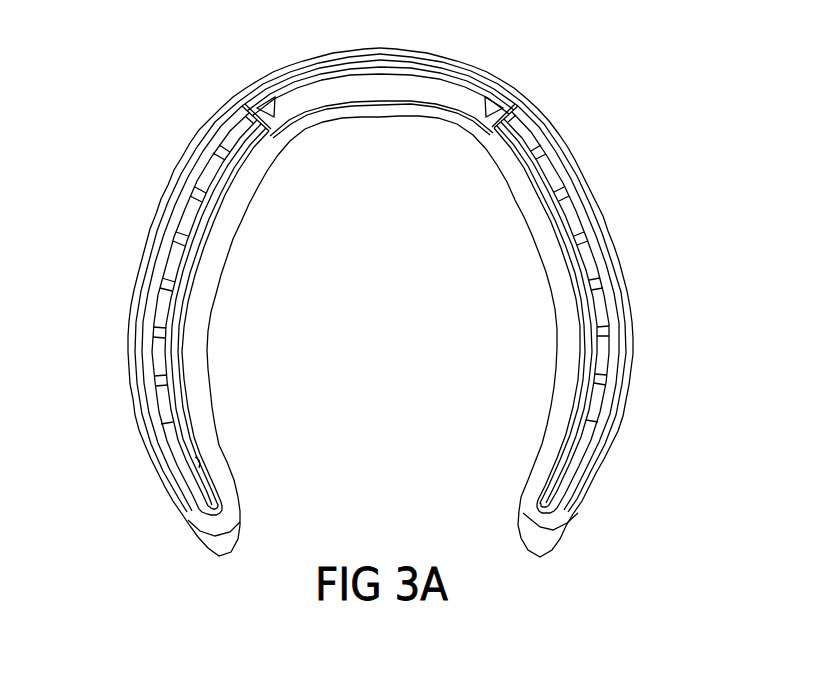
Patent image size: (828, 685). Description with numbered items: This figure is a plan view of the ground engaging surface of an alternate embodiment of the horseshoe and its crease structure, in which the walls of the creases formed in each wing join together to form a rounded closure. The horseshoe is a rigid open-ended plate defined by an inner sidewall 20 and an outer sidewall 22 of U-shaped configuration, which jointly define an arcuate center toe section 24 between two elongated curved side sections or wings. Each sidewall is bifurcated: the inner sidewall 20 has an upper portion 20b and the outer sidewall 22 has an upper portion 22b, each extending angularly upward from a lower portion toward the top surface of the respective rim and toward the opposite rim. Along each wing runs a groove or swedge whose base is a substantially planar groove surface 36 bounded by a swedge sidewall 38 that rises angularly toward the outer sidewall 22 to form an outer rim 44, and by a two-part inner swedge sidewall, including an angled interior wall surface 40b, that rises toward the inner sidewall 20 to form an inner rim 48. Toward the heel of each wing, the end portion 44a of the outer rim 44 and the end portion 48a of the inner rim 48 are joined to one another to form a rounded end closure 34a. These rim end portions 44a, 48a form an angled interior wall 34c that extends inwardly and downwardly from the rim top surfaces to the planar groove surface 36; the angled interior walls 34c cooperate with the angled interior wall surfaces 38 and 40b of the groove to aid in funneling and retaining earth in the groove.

The inner sidewall 20 is at (380, 308).
The upper portion of inner sidewall 20b is at (378, 306).
The outer sidewall 22 is at (349, 283).
The upper portion of outer sidewall 22b is at (338, 285).
The center toe section 24 is at (380, 81).
The rounded end closure 34a is at (377, 532).
The angled interior wall 34c is at (356, 534).
The planar groove surface 36 is at (380, 276).
The swedge sidewall 38 is at (344, 473).
The angled interior wall surface of groove 40b is at (242, 457).
The outer rim 44 is at (379, 313).
The end portion of outer rim 44a is at (370, 518).
The inner rim 48 is at (381, 314).
The end portion of inner rim 48a is at (381, 318).